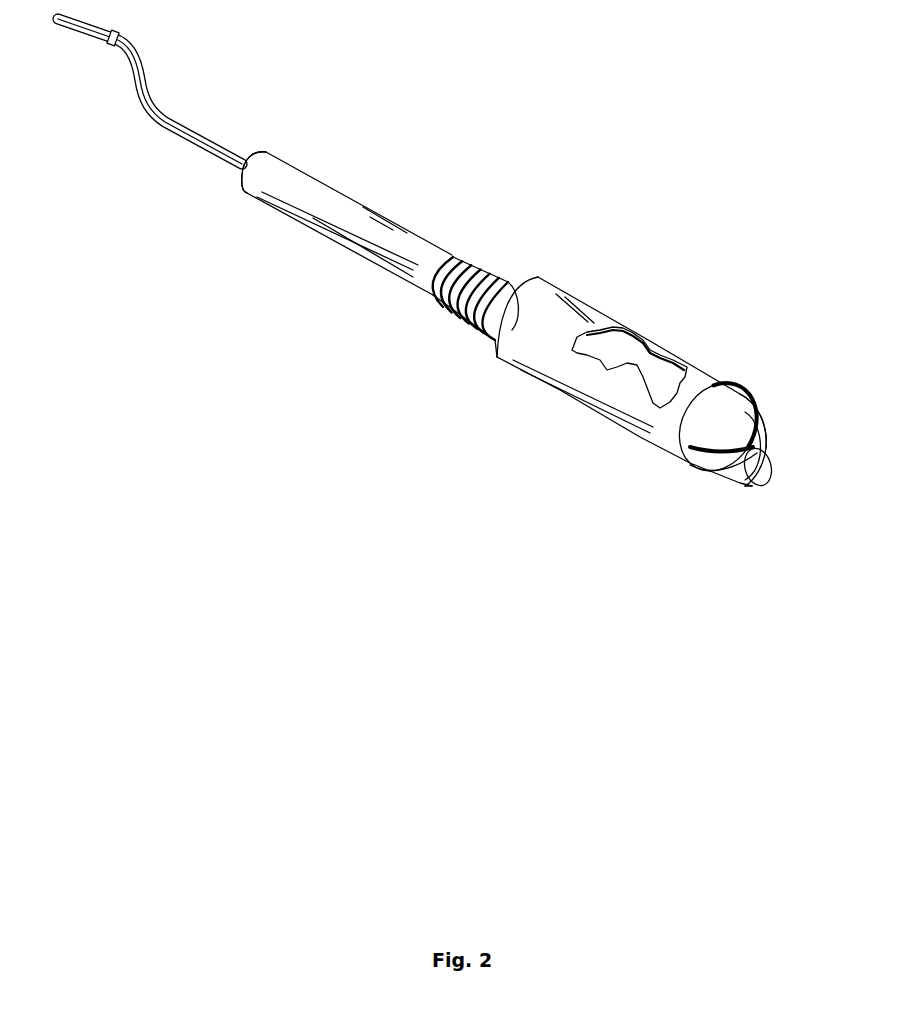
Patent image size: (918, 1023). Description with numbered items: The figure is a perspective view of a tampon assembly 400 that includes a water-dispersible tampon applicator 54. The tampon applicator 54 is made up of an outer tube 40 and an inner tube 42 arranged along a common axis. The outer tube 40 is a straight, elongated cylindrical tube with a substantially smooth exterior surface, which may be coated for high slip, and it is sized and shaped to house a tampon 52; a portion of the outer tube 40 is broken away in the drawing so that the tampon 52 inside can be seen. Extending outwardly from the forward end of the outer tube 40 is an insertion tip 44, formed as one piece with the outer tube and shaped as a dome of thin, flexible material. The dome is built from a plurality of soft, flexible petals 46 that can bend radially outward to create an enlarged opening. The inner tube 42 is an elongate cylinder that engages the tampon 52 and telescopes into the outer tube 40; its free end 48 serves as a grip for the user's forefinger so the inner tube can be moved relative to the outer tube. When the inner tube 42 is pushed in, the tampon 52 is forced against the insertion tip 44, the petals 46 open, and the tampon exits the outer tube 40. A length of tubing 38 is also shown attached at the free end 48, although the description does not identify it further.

The tubing 38 is at (168, 116).
The free end 48 is at (246, 160).
The inner tube 42 is at (303, 208).
The tampon applicator 54 is at (433, 222).
The tampon assembly 400 is at (527, 223).
The outer tube 40 is at (553, 370).
The tampon 52 is at (622, 350).
The insertion tip 44 is at (760, 430).
The petals 46 is at (758, 410).